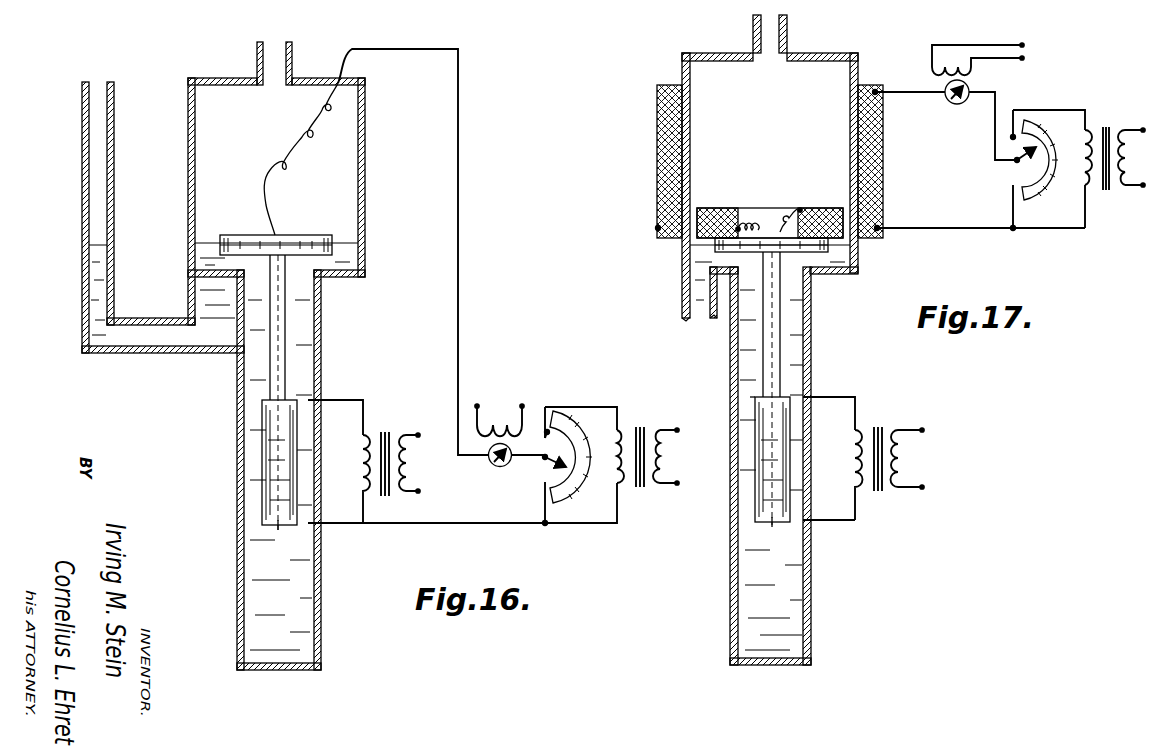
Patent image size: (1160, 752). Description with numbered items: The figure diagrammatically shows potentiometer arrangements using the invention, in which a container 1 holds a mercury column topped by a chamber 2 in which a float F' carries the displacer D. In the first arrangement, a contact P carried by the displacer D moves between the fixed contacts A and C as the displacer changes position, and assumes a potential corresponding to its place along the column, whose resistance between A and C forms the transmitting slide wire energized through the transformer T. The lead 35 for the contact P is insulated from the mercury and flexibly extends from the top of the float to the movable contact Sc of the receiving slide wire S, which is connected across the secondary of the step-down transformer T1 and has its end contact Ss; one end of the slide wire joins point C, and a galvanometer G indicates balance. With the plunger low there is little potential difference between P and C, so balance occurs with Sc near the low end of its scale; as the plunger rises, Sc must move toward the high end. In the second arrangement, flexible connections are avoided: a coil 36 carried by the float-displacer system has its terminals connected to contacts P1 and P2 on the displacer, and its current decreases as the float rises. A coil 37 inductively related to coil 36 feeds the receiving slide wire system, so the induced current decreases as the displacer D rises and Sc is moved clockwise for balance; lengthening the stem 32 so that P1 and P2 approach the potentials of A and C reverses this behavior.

In FIG. 16, the container / tube 1 is at (322, 627).
In FIG. 17, the container / tube 1 is at (815, 605).
In FIG. 16, the chamber 2 is at (365, 168).
In FIG. 16, the lead 35 is at (267, 192).
In FIG. 16, the float F' is at (276, 229).
In FIG. 16, the displacer D is at (260, 452).
In FIG. 17, the displacer D is at (788, 435).
In FIG. 16, the contact P is at (270, 528).
In FIG. 16, the contact A is at (313, 400).
In FIG. 17, the contact A is at (810, 395).
In FIG. 16, the contact C is at (322, 525).
In FIG. 17, the contact C is at (815, 522).
In FIG. 16, the transformer T is at (396, 419).
In FIG. 17, the transformer T is at (878, 430).
In FIG. 16, the galvanometer G is at (493, 464).
In FIG. 17, the galvanometer G is at (960, 105).
In FIG. 16, the receiving slide wire S is at (565, 493).
In FIG. 17, the receiving slide wire S is at (1040, 173).
In FIG. 16, the movable contact Sc is at (557, 463).
In FIG. 17, the movable contact Sc is at (1015, 163).
In FIG. 16, the slide wire contact Ss is at (563, 437).
In FIG. 17, the slide wire contact Ss is at (1037, 138).
In FIG. 16, the step-down transformer T1 is at (641, 408).
In FIG. 17, the step-down transformer T1 is at (1103, 127).
In FIG. 17, the coil 37 is at (660, 165).
In FIG. 17, the coil 36 is at (717, 207).
In FIG. 17, the stem 32 is at (780, 333).
In FIG. 17, the contact P1 is at (780, 522).
In FIG. 17, the contact P2 is at (757, 402).